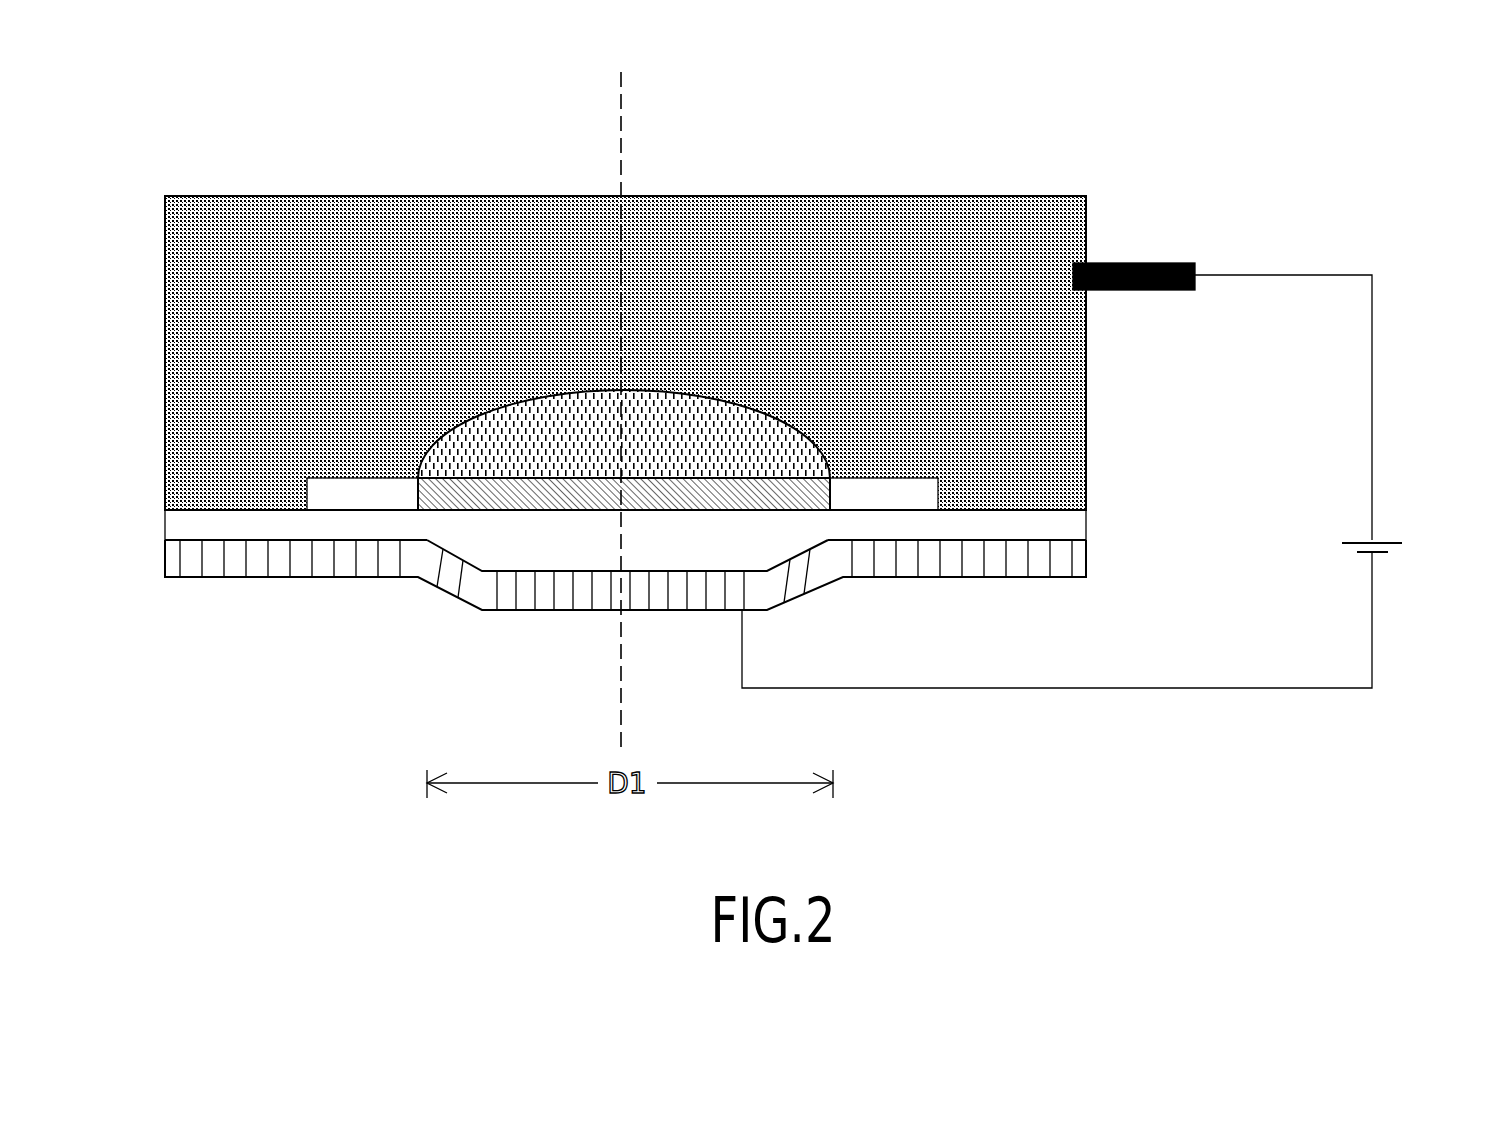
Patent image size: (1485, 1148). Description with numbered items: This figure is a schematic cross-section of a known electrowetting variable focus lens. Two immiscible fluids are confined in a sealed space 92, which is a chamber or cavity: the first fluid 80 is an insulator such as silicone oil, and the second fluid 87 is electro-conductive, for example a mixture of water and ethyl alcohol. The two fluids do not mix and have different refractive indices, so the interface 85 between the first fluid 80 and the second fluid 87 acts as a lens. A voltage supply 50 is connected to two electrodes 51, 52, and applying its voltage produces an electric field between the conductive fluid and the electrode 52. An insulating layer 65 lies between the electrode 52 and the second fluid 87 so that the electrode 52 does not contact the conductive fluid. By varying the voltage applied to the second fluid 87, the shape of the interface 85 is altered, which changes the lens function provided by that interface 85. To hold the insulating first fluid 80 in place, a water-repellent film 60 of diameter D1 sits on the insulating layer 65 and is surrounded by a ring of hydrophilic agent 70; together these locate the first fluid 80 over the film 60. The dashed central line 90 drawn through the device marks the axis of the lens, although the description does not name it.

The voltage supply 50 is at (1387, 538).
The electrode 51 is at (1172, 262).
The electrode 52 is at (768, 597).
The water-repellent film 60 is at (472, 492).
The insulating layer 65 is at (1068, 520).
The hydrophilic agent 70 is at (367, 492).
The first fluid 80 is at (743, 450).
The interface 85 is at (445, 432).
The second fluid 87 is at (952, 225).
The central axis 90 is at (622, 665).
The sealed space 92 is at (230, 196).